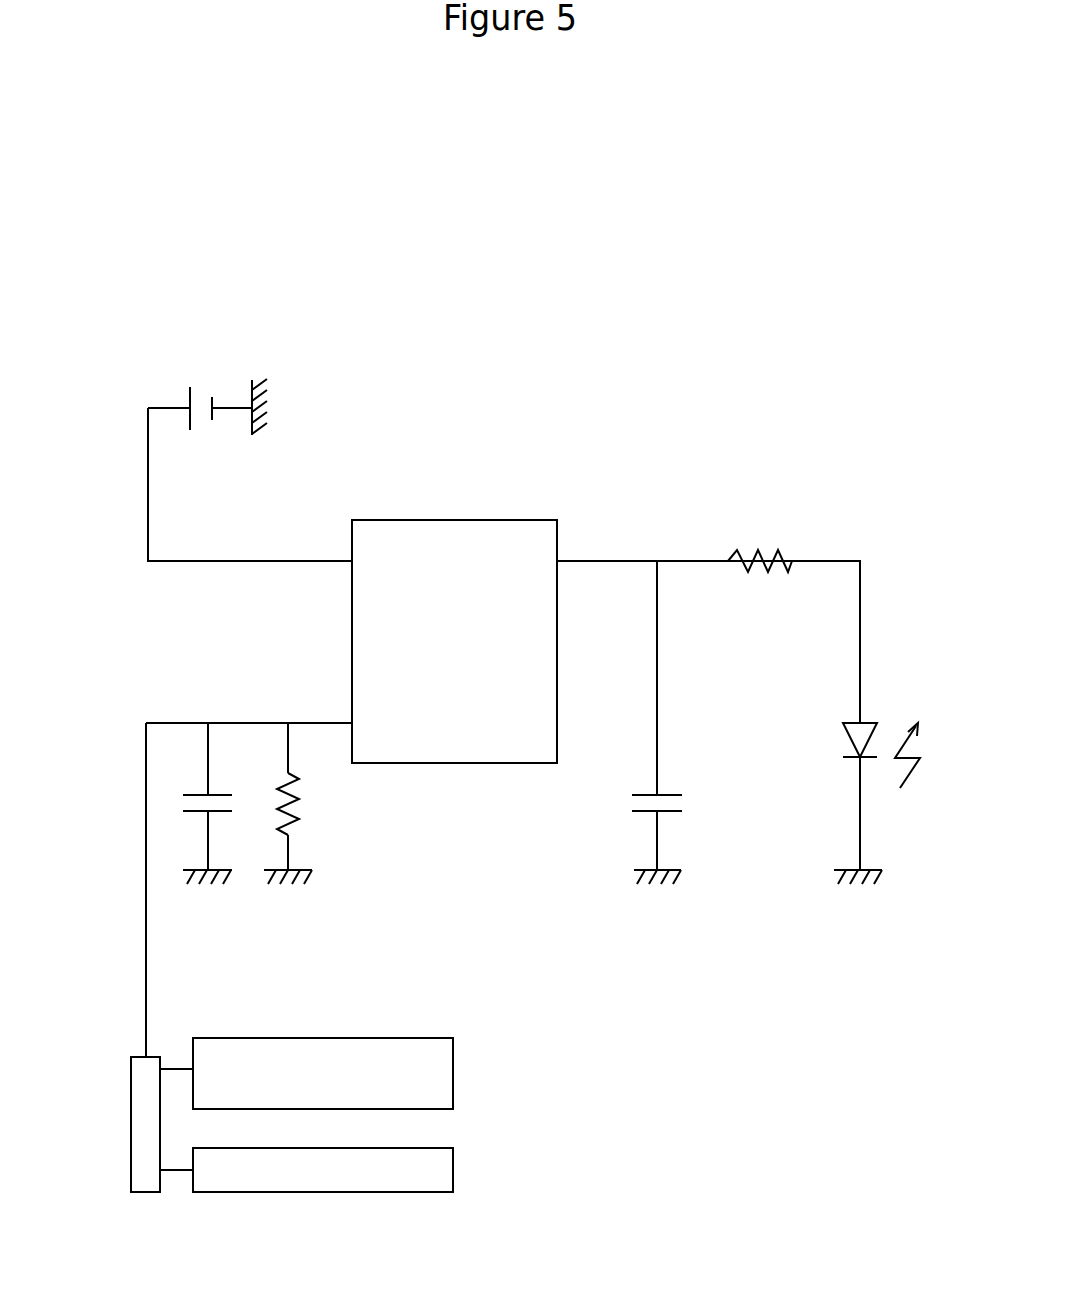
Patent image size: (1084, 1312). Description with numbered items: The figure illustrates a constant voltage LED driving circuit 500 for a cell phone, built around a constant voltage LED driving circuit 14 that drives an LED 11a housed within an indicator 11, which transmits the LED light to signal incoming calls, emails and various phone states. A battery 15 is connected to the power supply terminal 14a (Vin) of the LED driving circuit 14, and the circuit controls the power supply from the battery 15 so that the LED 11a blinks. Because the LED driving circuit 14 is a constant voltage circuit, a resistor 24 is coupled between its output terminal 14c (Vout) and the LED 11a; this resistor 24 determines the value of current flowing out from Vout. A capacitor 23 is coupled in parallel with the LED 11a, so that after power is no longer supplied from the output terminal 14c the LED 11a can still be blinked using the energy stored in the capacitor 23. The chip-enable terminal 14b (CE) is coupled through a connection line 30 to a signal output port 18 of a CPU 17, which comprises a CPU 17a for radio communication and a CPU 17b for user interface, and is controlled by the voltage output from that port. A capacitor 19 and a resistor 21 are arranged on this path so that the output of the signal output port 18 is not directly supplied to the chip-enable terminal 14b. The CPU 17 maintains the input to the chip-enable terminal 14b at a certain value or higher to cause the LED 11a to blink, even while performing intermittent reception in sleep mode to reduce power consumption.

The constant voltage LED driving circuit 500 is at (745, 188).
The battery 15 is at (198, 400).
The constant voltage LED driving circuit 14 is at (448, 520).
The power supply terminal 14a is at (352, 560).
The chip-enable terminal 14b is at (350, 722).
The output terminal 14c is at (558, 560).
The resistor 24 is at (760, 550).
The LED 11a is at (870, 722).
The indicator 11 is at (890, 778).
The capacitor 23 is at (674, 789).
The capacitor 19 is at (232, 812).
The resistor 21 is at (300, 827).
The connection line 30 is at (146, 893).
The signal output port 18 is at (131, 1138).
The CPU 17 is at (535, 1052).
The CPU for radio communication 17a is at (455, 1069).
The CPU for user interface 17b is at (455, 1172).